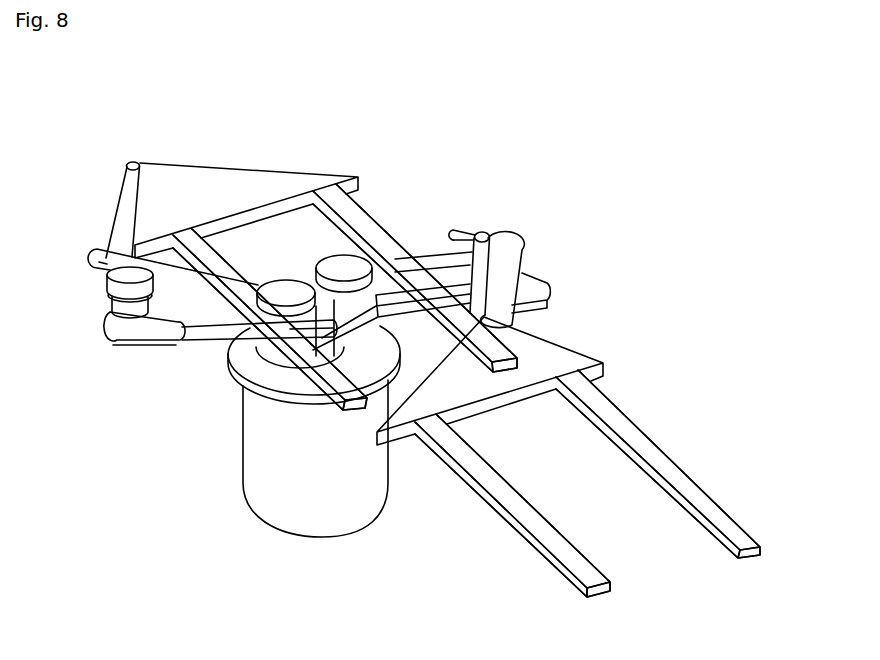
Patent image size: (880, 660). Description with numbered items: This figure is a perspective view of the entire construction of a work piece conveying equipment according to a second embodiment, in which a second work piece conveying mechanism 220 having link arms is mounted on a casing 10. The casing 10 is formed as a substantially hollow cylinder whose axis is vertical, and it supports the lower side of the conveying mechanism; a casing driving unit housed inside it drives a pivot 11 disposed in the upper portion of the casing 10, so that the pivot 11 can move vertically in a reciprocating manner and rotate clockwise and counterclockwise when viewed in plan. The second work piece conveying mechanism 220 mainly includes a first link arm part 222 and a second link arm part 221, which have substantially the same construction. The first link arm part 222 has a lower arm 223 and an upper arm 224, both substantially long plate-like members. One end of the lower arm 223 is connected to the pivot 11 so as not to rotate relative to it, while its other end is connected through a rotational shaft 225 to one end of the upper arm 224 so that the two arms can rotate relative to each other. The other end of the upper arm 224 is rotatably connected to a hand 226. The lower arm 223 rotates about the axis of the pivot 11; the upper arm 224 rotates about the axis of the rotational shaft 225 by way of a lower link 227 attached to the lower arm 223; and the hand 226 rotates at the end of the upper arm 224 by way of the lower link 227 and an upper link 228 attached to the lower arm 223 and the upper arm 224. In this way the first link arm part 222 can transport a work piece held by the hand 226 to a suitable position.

The casing 10 is at (250, 558).
The pivot 11 is at (318, 265).
The second work piece conveying mechanism 220 is at (473, 110).
The second link arm part 221 is at (605, 267).
The first link arm part 222 is at (217, 127).
The lower arm 223 is at (188, 348).
The upper arm 224 is at (115, 280).
The rotational shaft 225 is at (115, 303).
The hand 226 is at (268, 173).
The lower link 227 is at (213, 348).
The upper link 228 is at (125, 190).